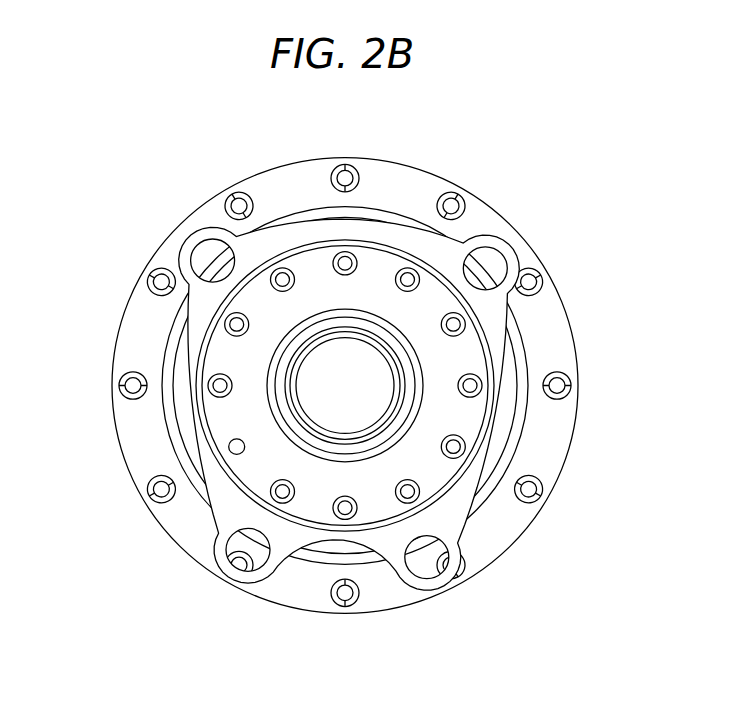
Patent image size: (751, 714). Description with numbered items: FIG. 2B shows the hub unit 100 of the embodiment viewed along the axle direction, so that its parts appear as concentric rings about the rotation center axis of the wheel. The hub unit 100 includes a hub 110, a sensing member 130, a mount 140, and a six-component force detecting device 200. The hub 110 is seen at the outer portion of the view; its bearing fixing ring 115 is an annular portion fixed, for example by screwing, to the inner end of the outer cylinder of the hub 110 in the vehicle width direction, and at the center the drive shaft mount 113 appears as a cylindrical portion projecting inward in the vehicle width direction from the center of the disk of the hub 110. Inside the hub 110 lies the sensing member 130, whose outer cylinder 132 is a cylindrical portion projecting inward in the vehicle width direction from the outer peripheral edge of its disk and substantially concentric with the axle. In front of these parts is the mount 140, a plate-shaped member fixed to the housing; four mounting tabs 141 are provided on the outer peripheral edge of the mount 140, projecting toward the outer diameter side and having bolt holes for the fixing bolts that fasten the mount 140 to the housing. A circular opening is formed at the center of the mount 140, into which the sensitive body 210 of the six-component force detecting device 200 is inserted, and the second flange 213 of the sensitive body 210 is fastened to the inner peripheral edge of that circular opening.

The hub unit 100 is at (378, 354).
The hub 110 is at (310, 386).
The bearing fixing ring 115 is at (305, 385).
The drive shaft mount 113 is at (231, 414).
The sensing member 130 is at (294, 403).
The outer cylinder 132 is at (345, 386).
The mount 140 is at (414, 425).
The mounting tabs 141 is at (345, 359).
The six-component force detecting device 200 is at (447, 404).
The sensitive body 210 is at (349, 404).
The second flange 213 is at (432, 385).